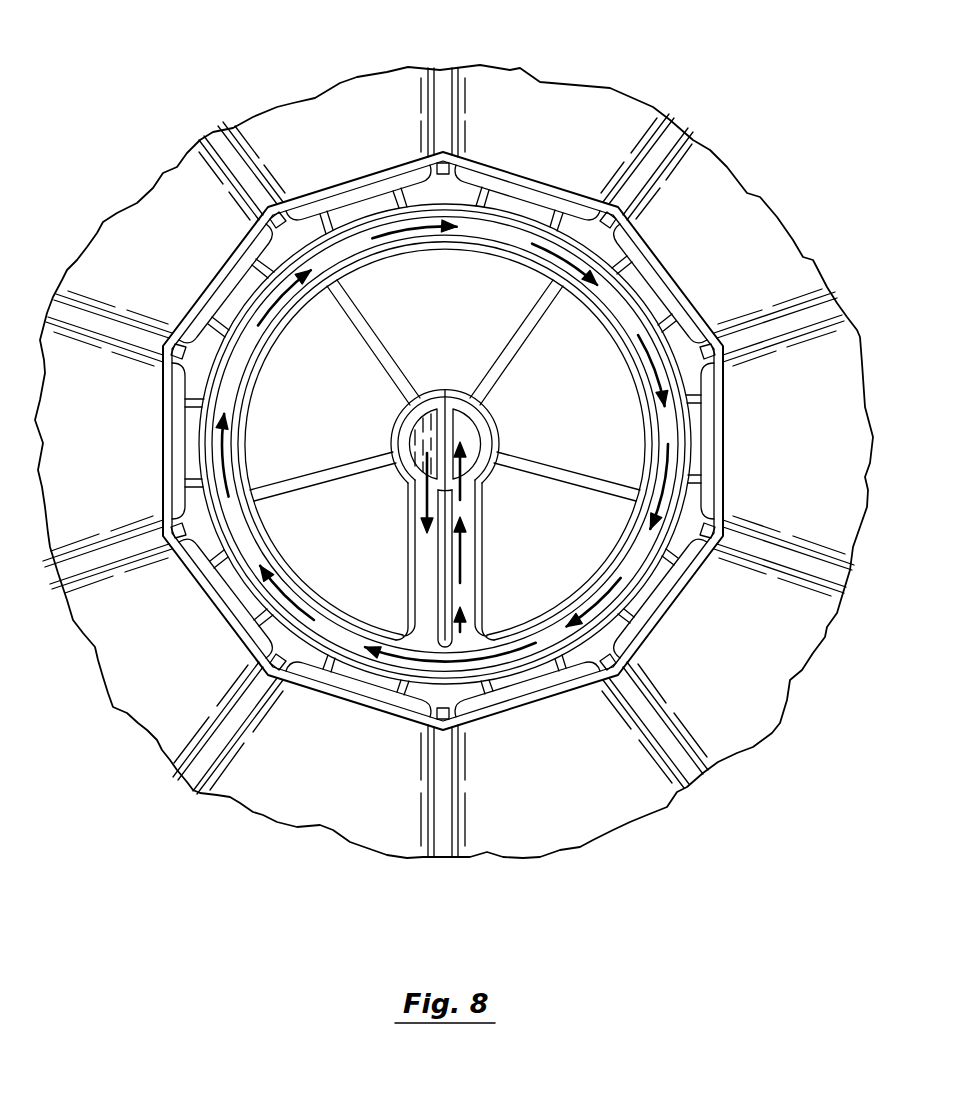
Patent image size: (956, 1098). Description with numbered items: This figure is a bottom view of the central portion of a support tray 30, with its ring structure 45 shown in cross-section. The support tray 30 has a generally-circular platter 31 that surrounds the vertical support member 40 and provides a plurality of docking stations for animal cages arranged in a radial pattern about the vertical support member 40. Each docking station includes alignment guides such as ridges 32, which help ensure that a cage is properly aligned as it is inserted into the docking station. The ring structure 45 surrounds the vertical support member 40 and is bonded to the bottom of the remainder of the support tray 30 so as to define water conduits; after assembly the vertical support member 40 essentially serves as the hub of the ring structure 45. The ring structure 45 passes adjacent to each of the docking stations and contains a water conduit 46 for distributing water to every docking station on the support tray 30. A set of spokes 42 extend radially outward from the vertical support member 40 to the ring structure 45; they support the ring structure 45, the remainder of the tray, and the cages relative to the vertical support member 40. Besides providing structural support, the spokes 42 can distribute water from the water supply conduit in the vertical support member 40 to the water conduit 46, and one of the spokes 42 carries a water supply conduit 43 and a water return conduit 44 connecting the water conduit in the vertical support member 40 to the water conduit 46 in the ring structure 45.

The support tray 30 is at (314, 100).
The platter 31 is at (147, 682).
The ridges 32 is at (293, 883).
The vertical support member 40 is at (508, 437).
The spokes 42 is at (517, 340).
The water supply conduit 43 is at (420, 587).
The water return conduit 44 is at (462, 590).
The ring structure 45 is at (242, 446).
The water conduit 46 is at (630, 330).